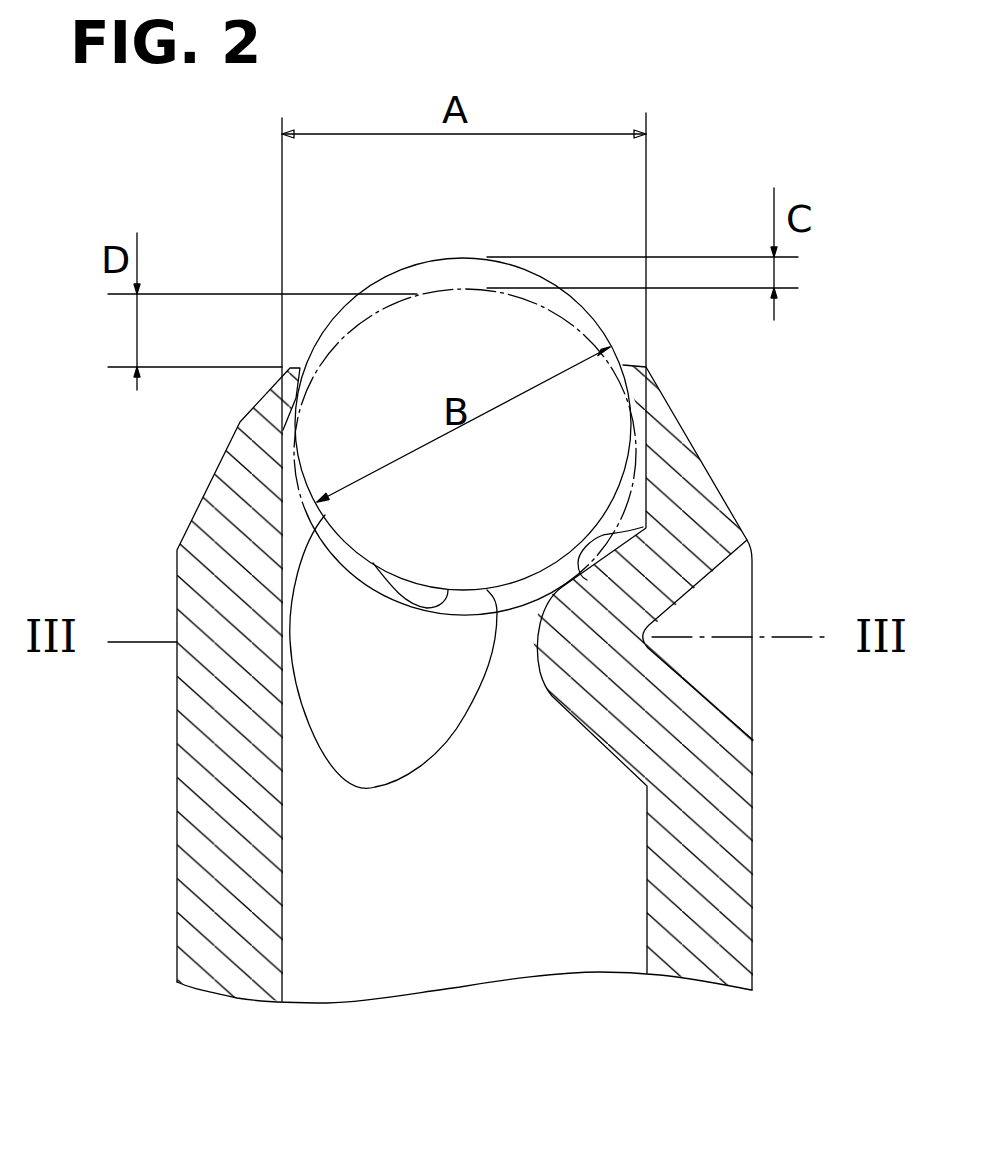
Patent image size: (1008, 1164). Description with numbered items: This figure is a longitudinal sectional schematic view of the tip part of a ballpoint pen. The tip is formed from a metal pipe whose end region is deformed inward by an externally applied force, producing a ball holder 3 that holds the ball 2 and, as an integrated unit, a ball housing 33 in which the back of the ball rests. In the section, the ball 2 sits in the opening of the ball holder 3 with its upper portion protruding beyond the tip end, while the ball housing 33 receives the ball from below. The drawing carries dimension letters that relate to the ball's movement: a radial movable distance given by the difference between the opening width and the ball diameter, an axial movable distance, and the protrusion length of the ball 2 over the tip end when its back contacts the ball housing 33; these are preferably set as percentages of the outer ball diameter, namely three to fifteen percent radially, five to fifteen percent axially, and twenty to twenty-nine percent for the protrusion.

The ball 2 is at (333, 420).
The ball holder 3 is at (643, 485).
The ball housing 33 is at (350, 713).